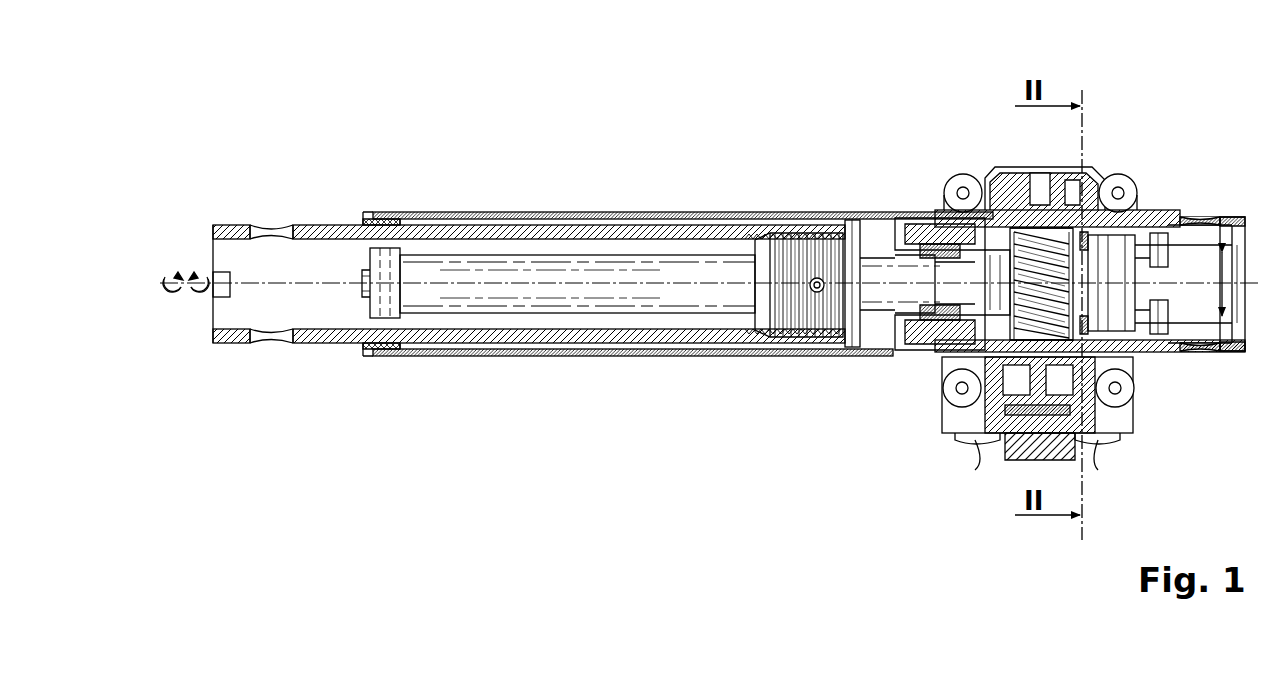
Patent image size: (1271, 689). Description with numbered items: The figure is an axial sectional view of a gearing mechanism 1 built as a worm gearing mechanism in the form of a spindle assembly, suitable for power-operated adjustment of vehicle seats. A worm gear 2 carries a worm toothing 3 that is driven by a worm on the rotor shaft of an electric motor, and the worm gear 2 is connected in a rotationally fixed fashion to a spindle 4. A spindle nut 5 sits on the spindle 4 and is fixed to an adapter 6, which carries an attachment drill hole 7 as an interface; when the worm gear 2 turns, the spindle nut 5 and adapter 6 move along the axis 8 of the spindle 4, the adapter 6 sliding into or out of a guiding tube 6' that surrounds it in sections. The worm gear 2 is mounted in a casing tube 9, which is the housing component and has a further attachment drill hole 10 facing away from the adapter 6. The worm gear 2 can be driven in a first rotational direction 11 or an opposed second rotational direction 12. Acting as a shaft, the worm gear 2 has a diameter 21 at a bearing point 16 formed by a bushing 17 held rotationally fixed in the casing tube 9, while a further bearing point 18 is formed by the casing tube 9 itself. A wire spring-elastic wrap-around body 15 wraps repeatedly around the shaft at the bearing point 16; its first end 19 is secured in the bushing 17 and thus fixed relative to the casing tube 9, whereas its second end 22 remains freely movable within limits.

The gearing mechanism 1 is at (366, 60).
The worm gear 2 is at (1130, 330).
The worm toothing 3 is at (1035, 300).
The spindle 4 is at (873, 262).
The spindle nut 5 is at (802, 238).
The adapter 6 is at (569, 310).
The guiding tube 6' is at (678, 303).
The attachment drill hole 7 is at (273, 234).
The axis 8 is at (590, 282).
The casing tube 9 is at (1240, 217).
The attachment drill hole 10 is at (1203, 219).
The first rotational direction 11 is at (200, 294).
The second rotational direction 12 is at (170, 294).
The spring-elastic wrap-around body 15 is at (1105, 290).
The bearing point 16 is at (1162, 255).
The bushing 17 is at (1150, 225).
The further bearing point 18 is at (935, 250).
The first end 19 is at (1120, 352).
The diameter 21 is at (1245, 343).
The second end 22 is at (1100, 190).